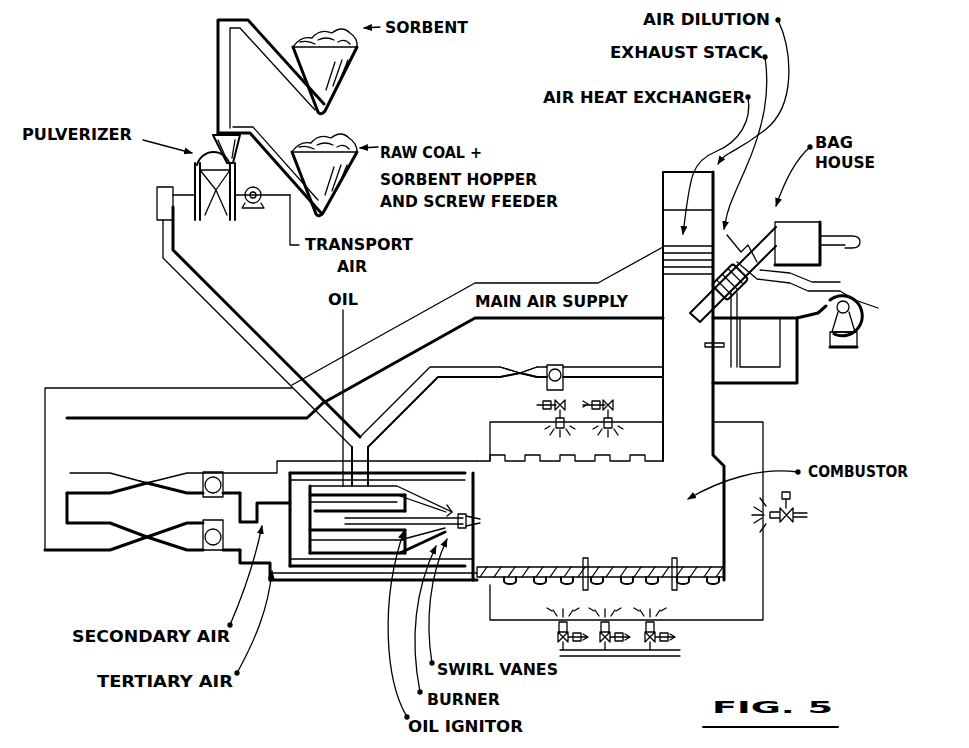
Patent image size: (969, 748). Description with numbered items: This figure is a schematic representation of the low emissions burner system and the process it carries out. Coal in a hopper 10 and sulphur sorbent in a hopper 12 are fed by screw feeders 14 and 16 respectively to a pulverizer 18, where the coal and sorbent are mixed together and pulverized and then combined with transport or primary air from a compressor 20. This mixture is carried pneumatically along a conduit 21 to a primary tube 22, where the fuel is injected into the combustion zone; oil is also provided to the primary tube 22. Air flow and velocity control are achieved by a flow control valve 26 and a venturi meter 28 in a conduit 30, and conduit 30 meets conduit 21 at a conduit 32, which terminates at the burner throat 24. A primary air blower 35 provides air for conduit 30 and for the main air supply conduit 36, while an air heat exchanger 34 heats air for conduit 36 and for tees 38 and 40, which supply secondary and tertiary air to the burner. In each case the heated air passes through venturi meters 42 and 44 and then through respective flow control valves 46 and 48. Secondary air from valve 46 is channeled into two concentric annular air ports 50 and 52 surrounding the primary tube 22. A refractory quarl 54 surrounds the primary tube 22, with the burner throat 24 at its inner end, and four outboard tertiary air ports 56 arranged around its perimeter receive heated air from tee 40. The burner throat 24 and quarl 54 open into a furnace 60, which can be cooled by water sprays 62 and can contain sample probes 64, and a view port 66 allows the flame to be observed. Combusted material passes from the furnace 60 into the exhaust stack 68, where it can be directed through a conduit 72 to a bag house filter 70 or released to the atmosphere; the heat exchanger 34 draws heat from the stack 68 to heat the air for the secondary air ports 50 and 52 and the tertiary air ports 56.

The hopper 10 is at (328, 202).
The hopper 12 is at (357, 62).
The screw feeder 14 is at (275, 150).
The screw feeder 16 is at (220, 78).
The pulverizer 18 is at (215, 155).
The compressor 20 is at (257, 210).
The conduit 21 is at (230, 329).
The primary tube 22 is at (470, 521).
The burner throat 24 is at (492, 513).
The flow control valve 26 is at (562, 365).
The venturi meter 28 is at (520, 373).
The conduit 30 is at (390, 425).
The conduit 32 is at (353, 458).
The air heat exchanger 34 is at (673, 256).
The primary air blower 35 is at (848, 321).
The main air supply conduit 36 is at (545, 282).
The tee 38 is at (80, 537).
The tee 40 is at (85, 480).
The venturi meter 42 is at (147, 537).
The venturi meter 44 is at (147, 483).
The flow control valve 46 is at (213, 540).
The flow control valve 48 is at (207, 485).
The annular air port 50 is at (503, 503).
The annular air port 52 is at (465, 528).
The refractory quarl 54 is at (465, 490).
The tertiary air ports 56 is at (480, 470).
The furnace 60 is at (705, 547).
The water sprays 62 is at (613, 402).
The sample probes 64 is at (724, 344).
The view port 66 is at (727, 467).
The exhaust stack 68 is at (670, 223).
The bag house filter 70 is at (802, 232).
The conduit 72 is at (803, 282).